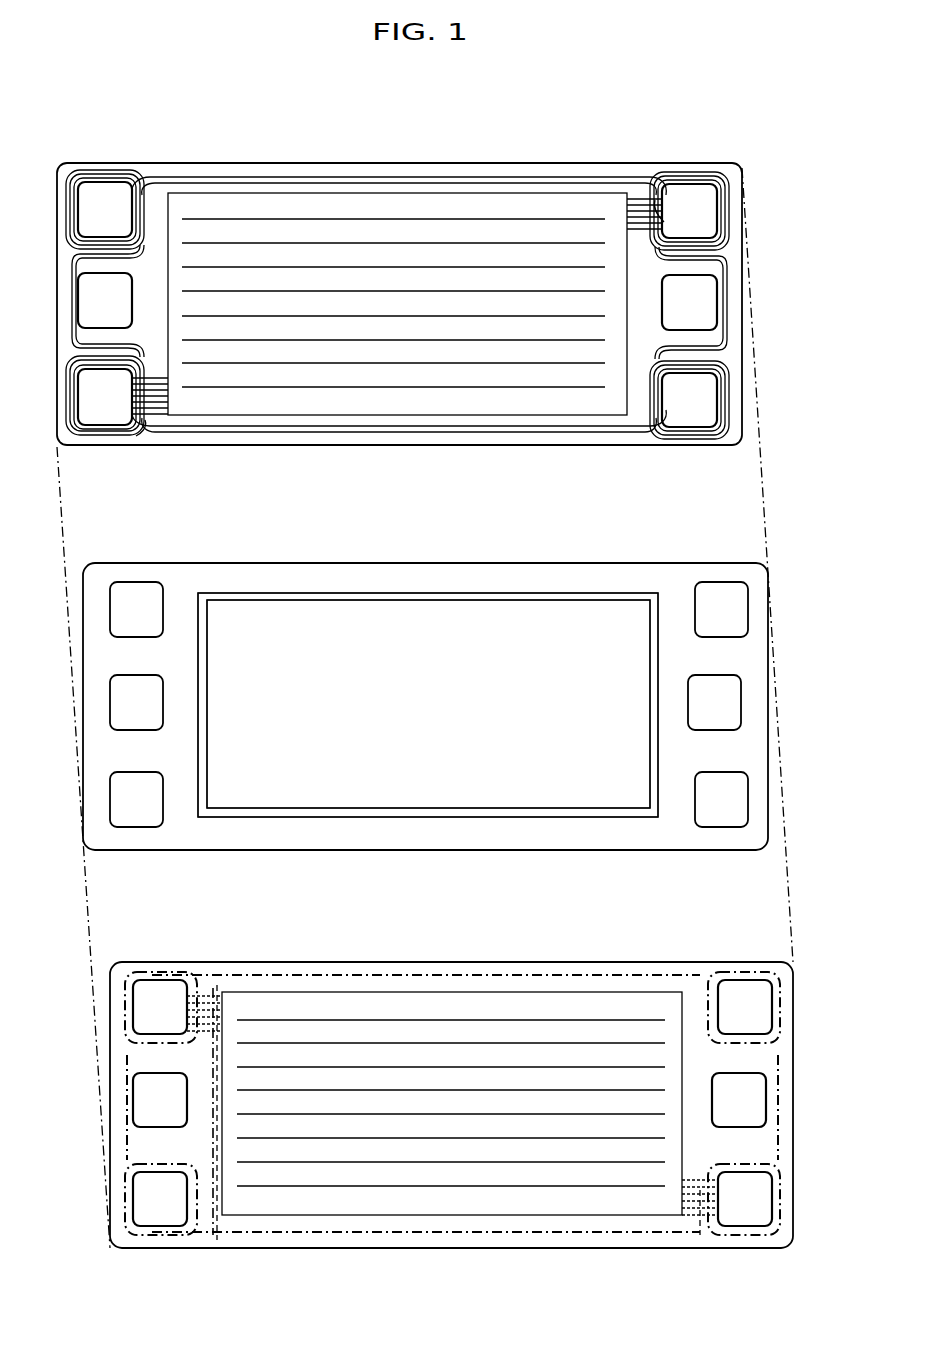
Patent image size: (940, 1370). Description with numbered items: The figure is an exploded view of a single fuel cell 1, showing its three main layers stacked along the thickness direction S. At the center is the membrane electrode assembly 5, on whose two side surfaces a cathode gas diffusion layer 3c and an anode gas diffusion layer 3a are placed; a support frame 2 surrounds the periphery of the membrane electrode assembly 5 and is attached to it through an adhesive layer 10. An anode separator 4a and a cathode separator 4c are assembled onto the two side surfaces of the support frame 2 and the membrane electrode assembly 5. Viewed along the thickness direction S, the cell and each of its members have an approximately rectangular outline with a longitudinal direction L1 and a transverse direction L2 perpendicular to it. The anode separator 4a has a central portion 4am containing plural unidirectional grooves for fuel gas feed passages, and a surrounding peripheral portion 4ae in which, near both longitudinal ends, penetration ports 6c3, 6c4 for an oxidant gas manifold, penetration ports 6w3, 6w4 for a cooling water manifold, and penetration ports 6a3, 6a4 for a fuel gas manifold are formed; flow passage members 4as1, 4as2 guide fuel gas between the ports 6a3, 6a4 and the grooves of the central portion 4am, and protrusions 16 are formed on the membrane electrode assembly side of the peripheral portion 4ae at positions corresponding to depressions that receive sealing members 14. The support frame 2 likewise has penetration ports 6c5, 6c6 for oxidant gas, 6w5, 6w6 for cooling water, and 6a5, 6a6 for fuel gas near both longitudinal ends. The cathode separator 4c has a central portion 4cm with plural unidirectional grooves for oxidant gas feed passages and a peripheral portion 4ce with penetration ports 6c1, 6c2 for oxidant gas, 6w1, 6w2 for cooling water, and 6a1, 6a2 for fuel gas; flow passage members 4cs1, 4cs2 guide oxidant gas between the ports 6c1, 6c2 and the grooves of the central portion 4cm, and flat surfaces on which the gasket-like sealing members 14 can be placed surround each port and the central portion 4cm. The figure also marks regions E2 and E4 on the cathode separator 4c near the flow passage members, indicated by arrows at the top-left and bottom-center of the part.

The single fuel cell 1 is at (77, 118).
The protrusions 16 is at (150, 164).
The anode separator 4a is at (415, 163).
The central portion of the anode separator 4am is at (473, 215).
The peripheral portion of the anode separator 4ae is at (655, 163).
The penetration port for an oxidant gas manifold 6c3 is at (96, 188).
The penetration port for a fuel gas manifold 6a3 is at (710, 188).
The thickness direction S is at (778, 240).
The penetration port for a cooling water manifold 6w4 is at (105, 328).
The penetration port for a fuel gas manifold 6a4 is at (115, 424).
The flow passage member 4as2 is at (150, 430).
The flow passage member 4as1 is at (640, 200).
The penetration port for an oxidant gas manifold 6c4 is at (688, 424).
The penetration port for a cooling water manifold 6w3 is at (712, 328).
The support frame 2 is at (207, 583).
The membrane electrode assembly 5 is at (318, 593).
The adhesive layer 10 is at (420, 598).
The cathode gas diffusion layer 3c is at (508, 608).
The anode gas diffusion layer 3a is at (615, 585).
The penetration port for an oxidant gas manifold 6c5 is at (122, 590).
The penetration port for a fuel gas manifold 6a5 is at (732, 590).
The penetration port for a cooling water manifold 6w6 is at (130, 728).
The penetration port for a fuel gas manifold 6a6 is at (155, 820).
The penetration port for an oxidant gas manifold 6c6 is at (715, 818).
The penetration port for a cooling water manifold 6w5 is at (728, 718).
The longitudinal direction L1 is at (860, 557).
The transverse direction L2 is at (826, 518).
The sealing members 14 is at (185, 978).
The cathode separator 4c is at (465, 962).
The central portion of the cathode separator 4cm is at (525, 1010).
The peripheral portion of the cathode separator 4ce is at (705, 970).
The penetration port for an oxidant gas manifold 6c1 is at (143, 990).
The penetration port for a fuel gas manifold 6a1 is at (752, 988).
The edge region E4 is at (121, 995).
The edge region E2 is at (413, 1198).
The penetration port for a cooling water manifold 6w2 is at (153, 1125).
The penetration port for a fuel gas manifold 6a2 is at (172, 1222).
The flow passage member 4cs1 is at (217, 1240).
The flow passage member 4cs2 is at (700, 1235).
The penetration port for an oxidant gas manifold 6c2 is at (742, 1222).
The penetration port for a cooling water manifold 6w1 is at (758, 1120).